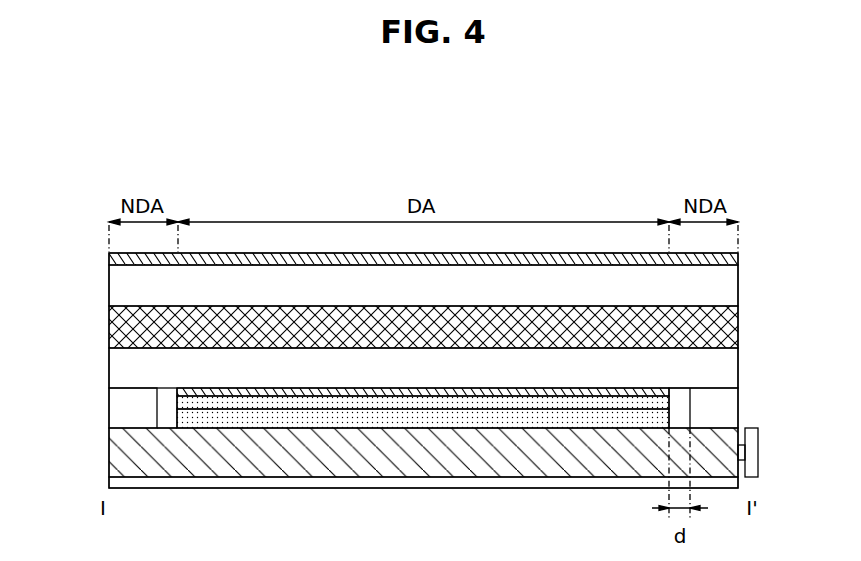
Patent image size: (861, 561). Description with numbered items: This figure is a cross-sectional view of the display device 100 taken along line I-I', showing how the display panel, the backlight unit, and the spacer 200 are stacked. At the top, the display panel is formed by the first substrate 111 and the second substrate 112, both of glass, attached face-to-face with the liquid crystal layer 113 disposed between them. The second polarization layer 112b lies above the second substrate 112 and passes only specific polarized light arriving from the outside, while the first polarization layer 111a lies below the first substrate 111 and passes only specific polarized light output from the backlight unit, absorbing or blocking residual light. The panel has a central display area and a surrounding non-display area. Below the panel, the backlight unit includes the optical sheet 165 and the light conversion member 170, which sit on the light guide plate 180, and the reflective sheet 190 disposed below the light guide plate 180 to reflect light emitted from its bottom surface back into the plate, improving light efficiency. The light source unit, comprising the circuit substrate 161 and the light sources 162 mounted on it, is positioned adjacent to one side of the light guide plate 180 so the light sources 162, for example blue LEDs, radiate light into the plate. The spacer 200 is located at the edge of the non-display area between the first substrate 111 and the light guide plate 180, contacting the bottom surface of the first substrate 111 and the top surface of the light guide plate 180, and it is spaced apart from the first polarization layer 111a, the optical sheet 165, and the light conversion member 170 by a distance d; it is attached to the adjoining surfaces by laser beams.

The display device 100 is at (603, 183).
The second polarization layer 112b is at (728, 260).
The second substrate 112 is at (728, 286).
The liquid crystal layer 113 is at (728, 327).
The first substrate 111 is at (728, 356).
The first polarization layer 111a is at (660, 386).
The optical sheet 165 is at (657, 403).
The light conversion member 170 is at (653, 419).
The spacer 200 is at (120, 408).
The light guide plate 180 is at (388, 462).
The reflective sheet 190 is at (448, 482).
The circuit substrate 161 is at (753, 453).
The light source 162 is at (738, 452).